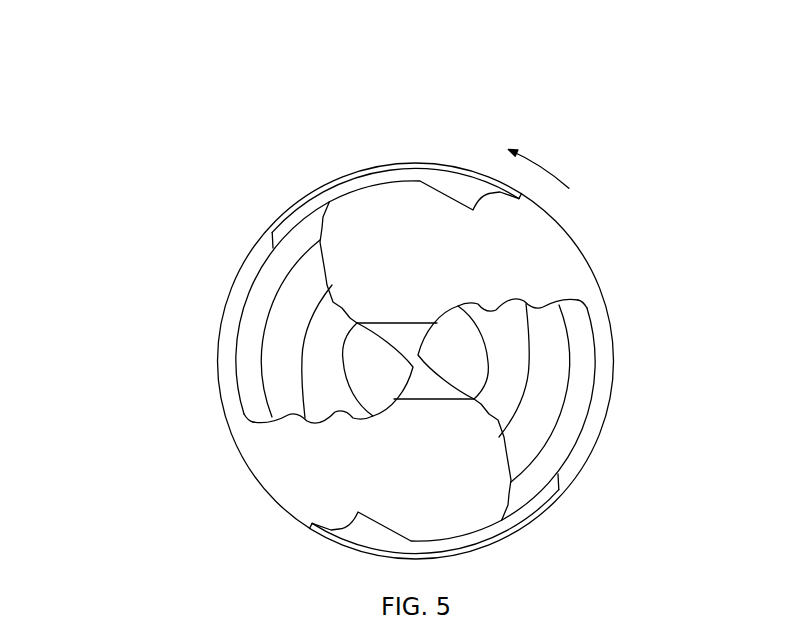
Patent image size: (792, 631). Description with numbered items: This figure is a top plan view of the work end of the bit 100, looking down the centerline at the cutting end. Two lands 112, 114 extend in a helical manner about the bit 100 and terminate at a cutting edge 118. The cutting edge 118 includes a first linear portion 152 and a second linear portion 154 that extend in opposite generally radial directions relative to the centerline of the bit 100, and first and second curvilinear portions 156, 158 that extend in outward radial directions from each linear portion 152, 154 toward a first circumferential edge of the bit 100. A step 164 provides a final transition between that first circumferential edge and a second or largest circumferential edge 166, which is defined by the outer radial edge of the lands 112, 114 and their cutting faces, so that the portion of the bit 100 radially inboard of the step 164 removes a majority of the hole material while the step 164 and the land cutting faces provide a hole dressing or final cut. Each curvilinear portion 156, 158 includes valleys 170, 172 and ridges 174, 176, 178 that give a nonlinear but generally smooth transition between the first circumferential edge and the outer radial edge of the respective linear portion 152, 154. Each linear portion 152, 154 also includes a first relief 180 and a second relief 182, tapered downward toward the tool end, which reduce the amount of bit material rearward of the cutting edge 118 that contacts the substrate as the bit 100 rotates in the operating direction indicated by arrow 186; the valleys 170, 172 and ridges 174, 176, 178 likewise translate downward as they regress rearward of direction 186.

The bit 100 is at (488, 126).
The land 112 is at (264, 356).
The land 114 is at (525, 421).
The cutting edge 118 is at (542, 253).
The first linear portion 152 is at (428, 323).
The second linear portion 154 is at (397, 400).
The first curvilinear portion 156 is at (537, 272).
The second curvilinear portion 158 is at (318, 453).
The step 164 is at (525, 525).
The second circumferential edge 166 is at (595, 452).
The valley 170 is at (488, 310).
The valley 172 is at (540, 307).
The ridge 174 is at (457, 310).
The ridge 176 is at (526, 305).
The ridge 178 is at (585, 308).
The first relief 180 is at (373, 390).
The second relief 182 is at (357, 348).
The arrow 186 is at (543, 168).